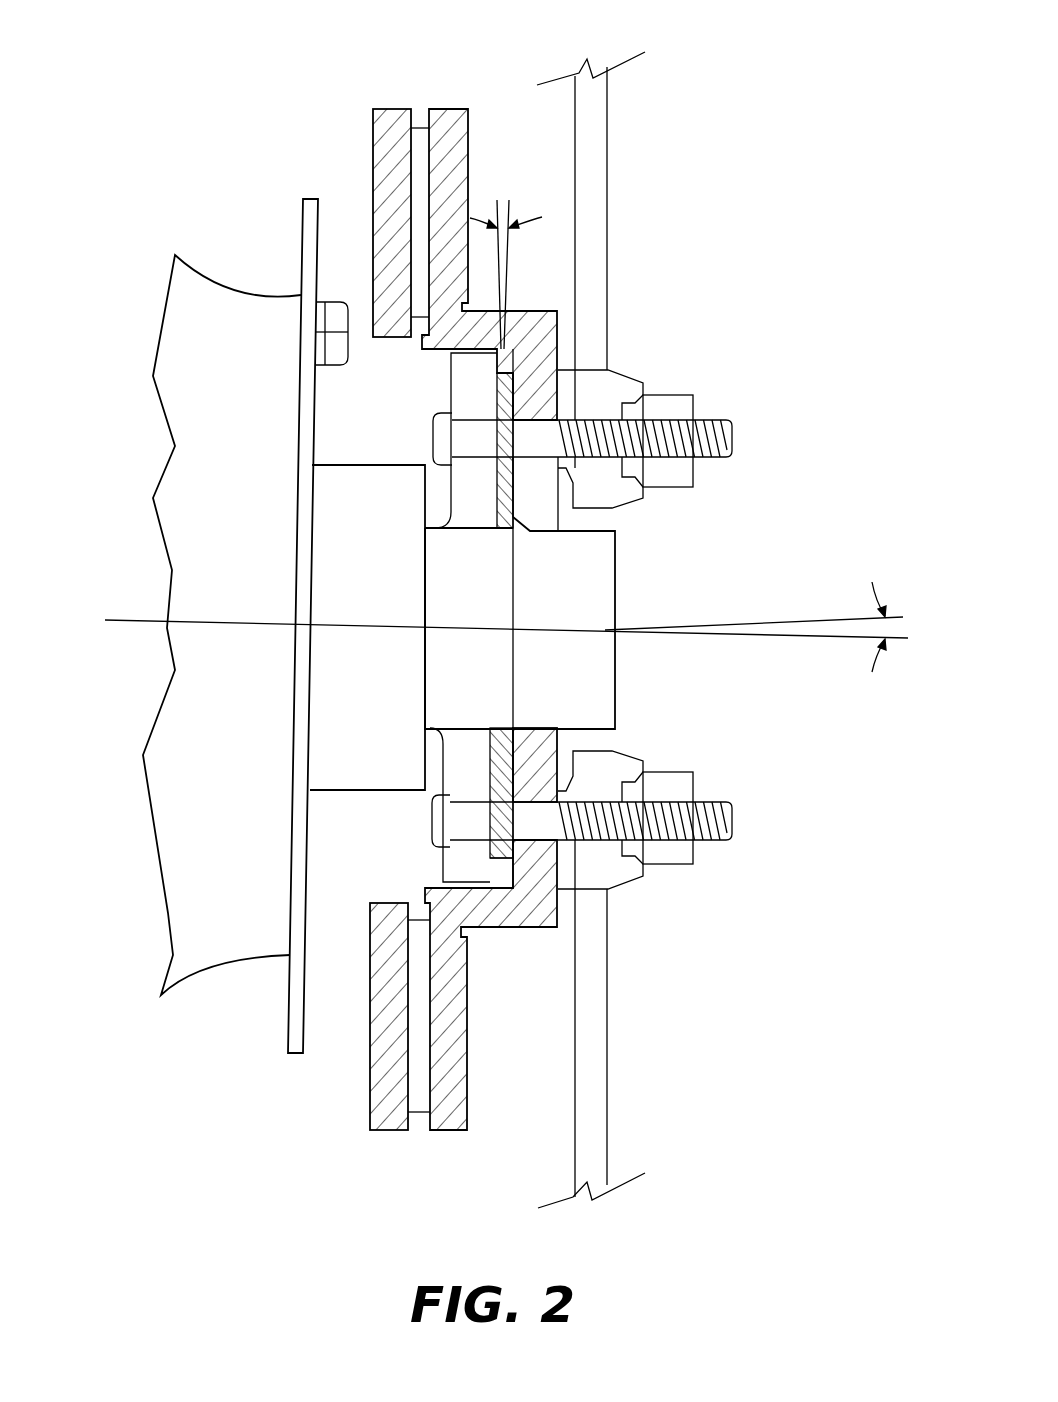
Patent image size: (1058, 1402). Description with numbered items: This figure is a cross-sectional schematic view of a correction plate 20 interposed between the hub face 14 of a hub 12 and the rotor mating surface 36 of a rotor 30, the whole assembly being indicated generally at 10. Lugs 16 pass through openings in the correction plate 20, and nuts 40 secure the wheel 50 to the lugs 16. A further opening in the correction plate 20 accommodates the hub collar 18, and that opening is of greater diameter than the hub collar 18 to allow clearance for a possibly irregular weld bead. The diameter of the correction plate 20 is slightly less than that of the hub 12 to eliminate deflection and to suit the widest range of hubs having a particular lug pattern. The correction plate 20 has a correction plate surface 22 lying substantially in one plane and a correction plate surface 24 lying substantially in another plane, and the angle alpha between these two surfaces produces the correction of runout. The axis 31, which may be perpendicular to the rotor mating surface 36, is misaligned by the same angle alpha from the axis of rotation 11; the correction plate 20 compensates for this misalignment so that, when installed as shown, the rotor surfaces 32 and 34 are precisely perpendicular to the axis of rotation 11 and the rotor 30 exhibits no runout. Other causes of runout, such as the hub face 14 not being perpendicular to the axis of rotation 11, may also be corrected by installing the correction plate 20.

The wheel end assembly 10 is at (88, 265).
The axis of rotation 11 is at (776, 638).
The hub 12 is at (480, 874).
The hub face 14 is at (493, 771).
The lugs 16 is at (713, 418).
The hub collar 18 is at (603, 530).
The correction plate 20 is at (513, 513).
The correction plate surface 22 is at (498, 743).
The correction plate surface 24 is at (500, 501).
The rotor 30 is at (398, 76).
The axis 31 is at (687, 620).
The rotor surface 32 is at (472, 148).
The rotor surface 34 is at (373, 130).
The rotor mating surface 36 is at (513, 386).
The nuts 40 is at (660, 397).
The wheel 50 is at (611, 238).